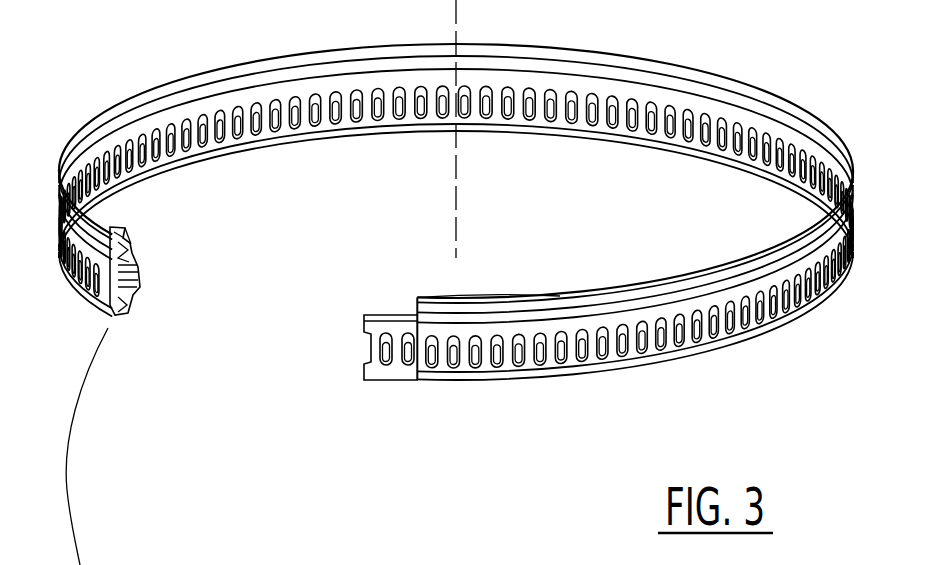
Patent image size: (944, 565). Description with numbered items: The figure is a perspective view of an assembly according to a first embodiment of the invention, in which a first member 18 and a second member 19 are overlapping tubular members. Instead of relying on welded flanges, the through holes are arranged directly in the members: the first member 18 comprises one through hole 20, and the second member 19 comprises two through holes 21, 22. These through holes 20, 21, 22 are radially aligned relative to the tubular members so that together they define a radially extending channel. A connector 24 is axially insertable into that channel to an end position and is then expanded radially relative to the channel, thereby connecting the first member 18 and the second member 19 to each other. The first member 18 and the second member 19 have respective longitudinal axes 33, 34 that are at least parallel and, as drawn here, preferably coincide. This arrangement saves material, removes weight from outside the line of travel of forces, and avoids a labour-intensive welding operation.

The first member 18 is at (346, 417).
The second member 19 is at (380, 297).
The through hole 20 is at (387, 343).
The through hole 21 is at (647, 123).
The through hole 22 is at (432, 357).
The connector 24 is at (175, 302).
The longitudinal axis 33 is at (457, 23).
The longitudinal axis 34 is at (548, 129).